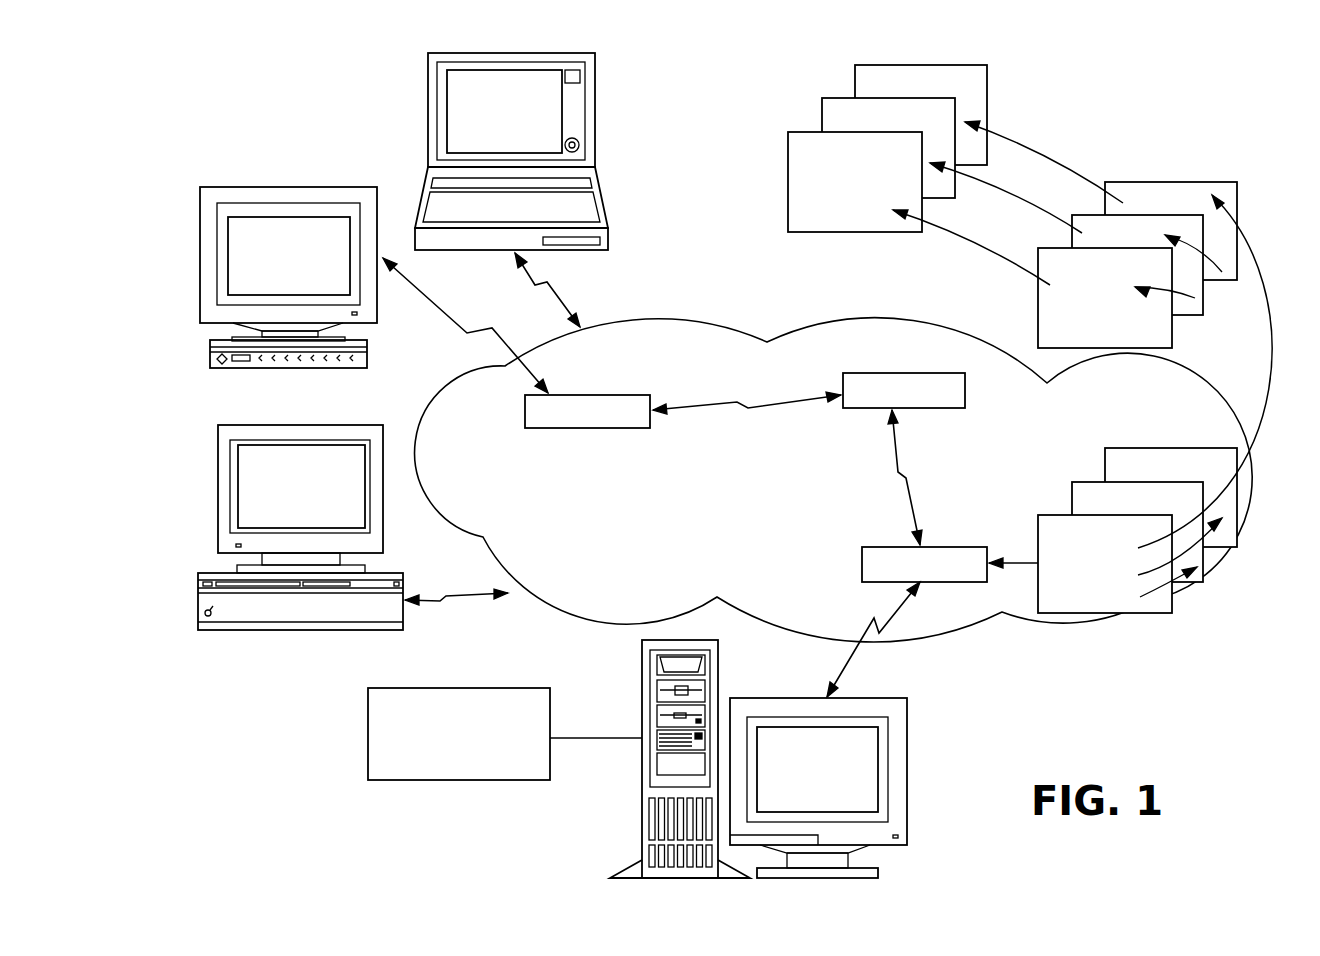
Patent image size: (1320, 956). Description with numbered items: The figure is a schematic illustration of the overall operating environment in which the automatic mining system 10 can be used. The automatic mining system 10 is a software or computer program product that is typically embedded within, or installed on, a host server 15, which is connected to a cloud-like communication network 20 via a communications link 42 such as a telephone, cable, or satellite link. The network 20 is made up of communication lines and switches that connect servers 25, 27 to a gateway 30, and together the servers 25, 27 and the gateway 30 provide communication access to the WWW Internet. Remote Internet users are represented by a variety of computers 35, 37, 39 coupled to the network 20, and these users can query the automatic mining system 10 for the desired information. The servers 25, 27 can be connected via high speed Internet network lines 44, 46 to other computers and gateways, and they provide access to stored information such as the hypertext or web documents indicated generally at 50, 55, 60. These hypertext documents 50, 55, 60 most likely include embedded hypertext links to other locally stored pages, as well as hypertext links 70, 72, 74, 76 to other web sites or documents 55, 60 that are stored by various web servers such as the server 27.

The automatic mining system 10 is at (368, 728).
The host server 15 is at (642, 683).
The communication network 20 is at (703, 317).
The server 25 is at (902, 547).
The server 27 is at (917, 373).
The gateway 30 is at (582, 428).
The computer 35 is at (603, 200).
The computer 37 is at (349, 187).
The computer 39 is at (350, 425).
The communication link 42 is at (842, 673).
The high speed Internet network line 44 is at (912, 510).
The high speed Internet network line 46 is at (735, 403).
The hypertext documents 50 is at (1250, 520).
The hypertext documents 55 is at (1247, 205).
The hypertext documents 60 is at (807, 118).
The hypertext link 70 is at (1268, 367).
The hypertext link 72 is at (1062, 167).
The hypertext link 74 is at (1028, 205).
The hypertext link 76 is at (983, 245).